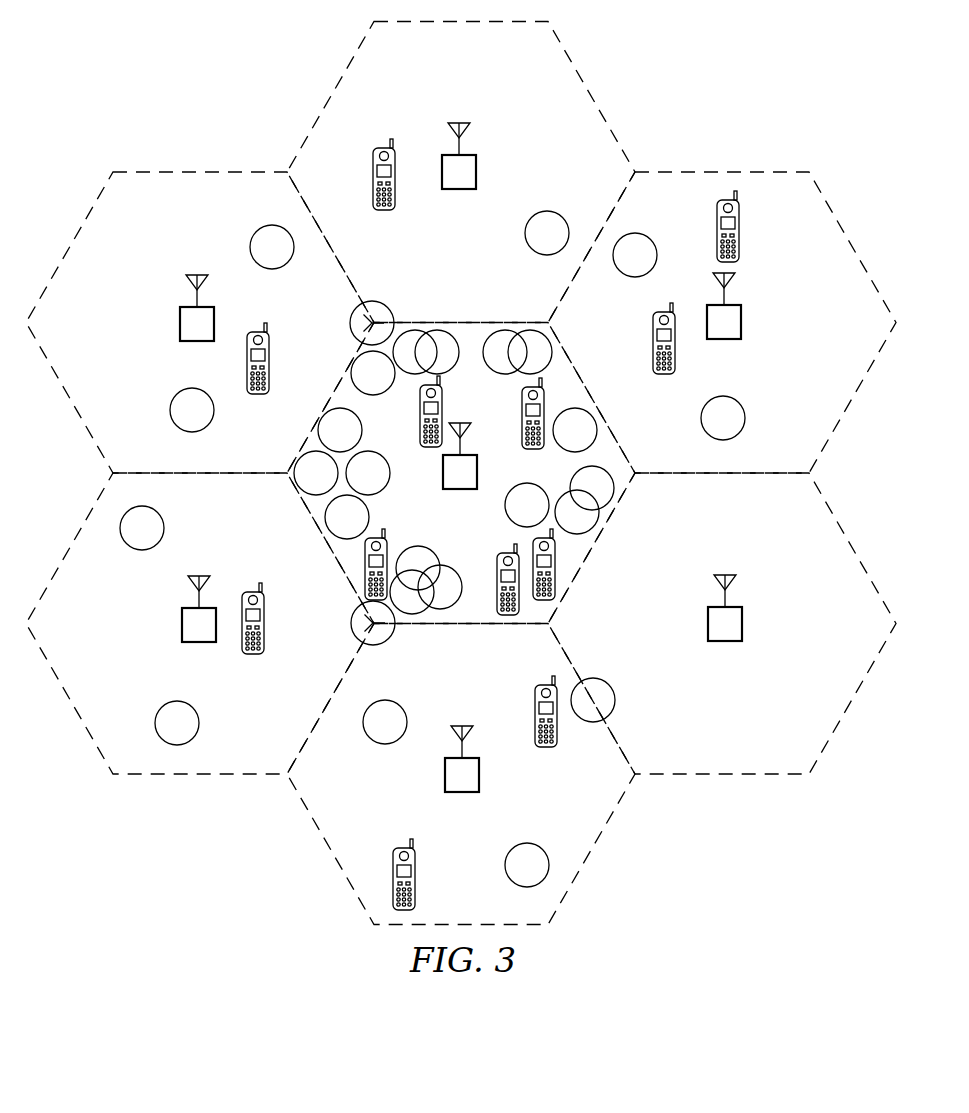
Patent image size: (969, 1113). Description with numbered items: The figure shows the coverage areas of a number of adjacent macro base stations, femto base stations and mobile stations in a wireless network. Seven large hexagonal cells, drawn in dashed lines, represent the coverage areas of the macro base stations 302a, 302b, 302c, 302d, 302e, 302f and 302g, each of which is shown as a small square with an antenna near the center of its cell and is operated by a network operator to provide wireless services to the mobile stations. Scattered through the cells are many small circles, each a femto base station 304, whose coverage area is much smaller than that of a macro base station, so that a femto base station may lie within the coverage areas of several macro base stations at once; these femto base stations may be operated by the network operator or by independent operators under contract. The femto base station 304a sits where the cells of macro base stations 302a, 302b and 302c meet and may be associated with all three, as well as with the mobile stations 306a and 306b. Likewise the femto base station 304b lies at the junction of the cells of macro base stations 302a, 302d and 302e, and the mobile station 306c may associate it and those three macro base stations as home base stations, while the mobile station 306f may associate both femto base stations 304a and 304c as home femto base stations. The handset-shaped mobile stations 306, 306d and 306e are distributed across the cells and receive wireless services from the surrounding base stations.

The macro base station 302a is at (477, 470).
The macro base station 302b is at (477, 172).
The macro base station 302c is at (180, 322).
The macro base station 302d is at (182, 625).
The macro base station 302e is at (478, 775).
The macro base station 302f is at (742, 625).
The macro base station 302g is at (738, 320).
The femto base station 304 is at (256, 232).
The femto base station 304a is at (372, 302).
The femto base station 304b is at (355, 633).
The femto base station 304c is at (615, 700).
The mobile station 306 is at (740, 225).
The mobile station 306a is at (258, 330).
The mobile station 306b is at (383, 148).
The mobile station 306c is at (252, 655).
The mobile station 306d is at (405, 848).
The mobile station 306e is at (533, 712).
The mobile station 306f is at (556, 575).